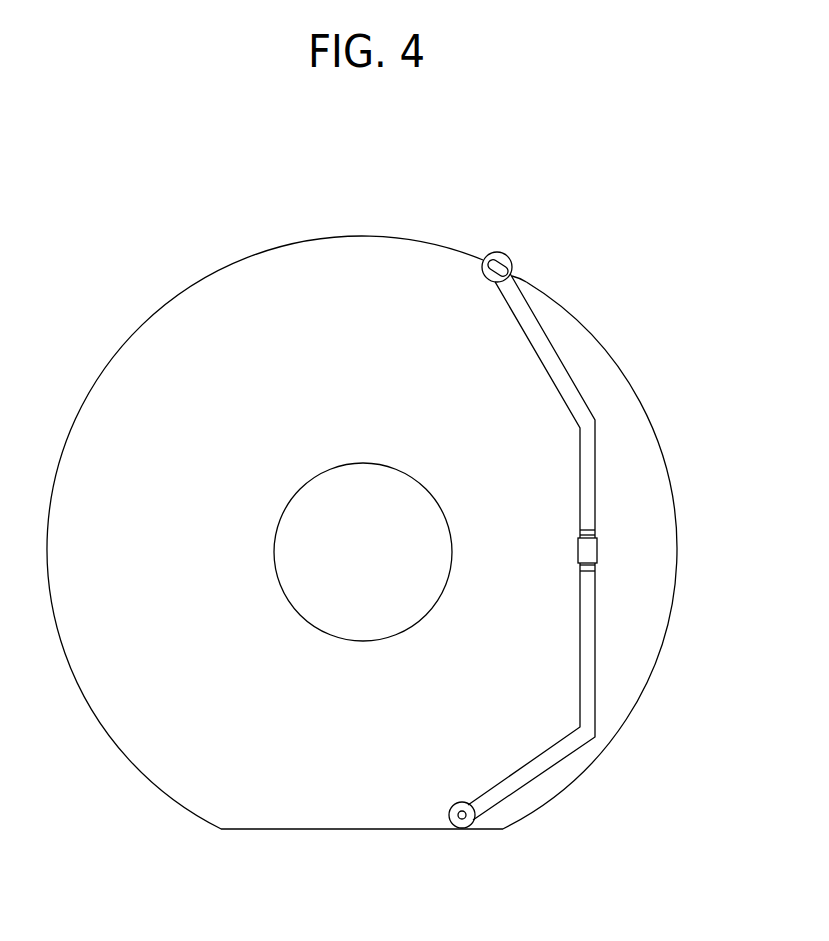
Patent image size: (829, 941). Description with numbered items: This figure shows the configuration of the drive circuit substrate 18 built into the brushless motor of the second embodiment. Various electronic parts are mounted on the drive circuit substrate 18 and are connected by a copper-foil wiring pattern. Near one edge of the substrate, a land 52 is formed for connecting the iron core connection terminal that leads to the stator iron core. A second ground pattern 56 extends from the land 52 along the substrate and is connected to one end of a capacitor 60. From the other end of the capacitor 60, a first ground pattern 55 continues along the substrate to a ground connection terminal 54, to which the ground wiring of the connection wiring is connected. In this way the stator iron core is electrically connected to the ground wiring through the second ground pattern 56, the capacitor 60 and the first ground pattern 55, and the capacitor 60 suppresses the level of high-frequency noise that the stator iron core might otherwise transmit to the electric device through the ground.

The drive circuit substrate 18 is at (180, 415).
The land 52 is at (508, 257).
The ground connection terminal 54 is at (467, 817).
The first ground pattern 55 is at (597, 636).
The second ground pattern 56 is at (580, 390).
The capacitor 60 is at (592, 555).